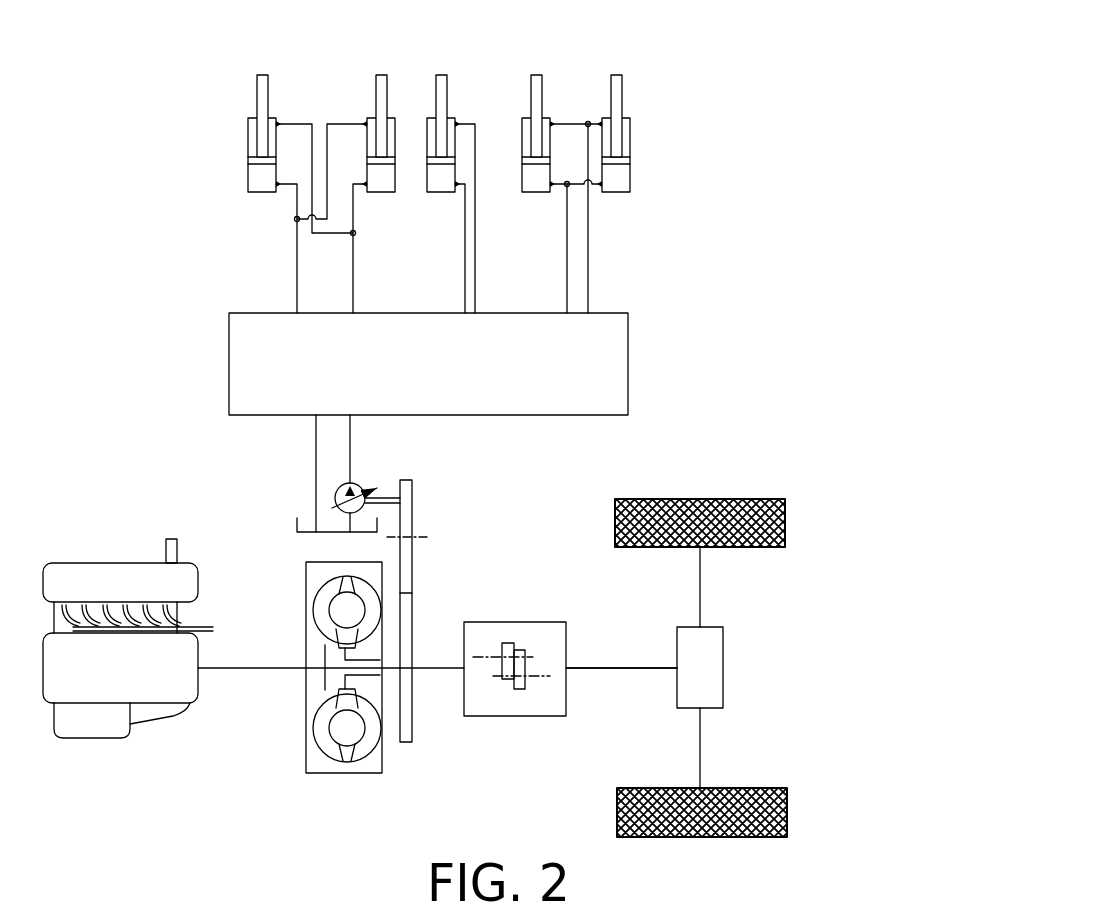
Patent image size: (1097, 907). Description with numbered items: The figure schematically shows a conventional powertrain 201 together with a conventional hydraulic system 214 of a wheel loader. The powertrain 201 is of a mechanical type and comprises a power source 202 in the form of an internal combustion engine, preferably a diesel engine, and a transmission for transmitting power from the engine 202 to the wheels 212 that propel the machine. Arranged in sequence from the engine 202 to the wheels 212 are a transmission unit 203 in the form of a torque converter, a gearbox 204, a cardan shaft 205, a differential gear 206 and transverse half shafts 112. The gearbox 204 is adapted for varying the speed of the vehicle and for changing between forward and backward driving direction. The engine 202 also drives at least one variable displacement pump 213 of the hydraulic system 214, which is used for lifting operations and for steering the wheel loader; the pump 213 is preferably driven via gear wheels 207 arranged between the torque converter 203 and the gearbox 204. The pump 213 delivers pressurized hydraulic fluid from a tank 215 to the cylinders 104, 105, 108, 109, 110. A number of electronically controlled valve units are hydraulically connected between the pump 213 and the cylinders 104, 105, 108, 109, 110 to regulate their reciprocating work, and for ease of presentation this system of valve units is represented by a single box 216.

The hydraulic cylinder 104 is at (252, 112).
The hydraulic cylinder 105 is at (372, 110).
The hydraulic cylinder 110 is at (455, 110).
The hydraulic cylinder 108 is at (533, 195).
The hydraulic cylinder 109 is at (603, 110).
The hydraulic system 214 is at (663, 245).
The box representing valve units 216 is at (628, 365).
The variable displacement pump 213 is at (337, 498).
The tank 215 is at (293, 525).
The gear wheels 207 is at (422, 580).
The power source 202 is at (65, 573).
The powertrain 201 is at (537, 507).
The transmission unit 203 is at (317, 765).
The gearbox 204 is at (507, 622).
The cardan shaft 205 is at (640, 668).
The differential gear 206 is at (723, 667).
The transverse half shafts 112 is at (703, 590).
The wheels 212 is at (722, 498).